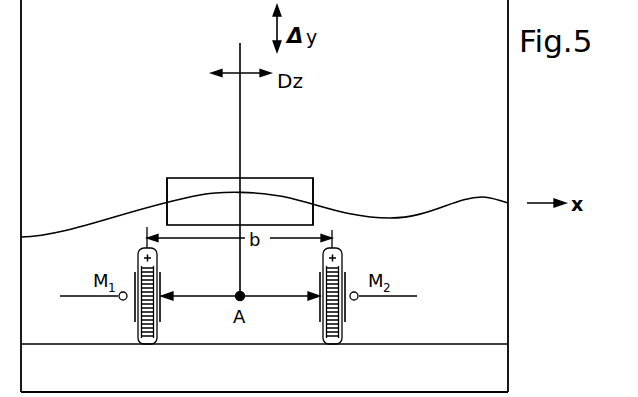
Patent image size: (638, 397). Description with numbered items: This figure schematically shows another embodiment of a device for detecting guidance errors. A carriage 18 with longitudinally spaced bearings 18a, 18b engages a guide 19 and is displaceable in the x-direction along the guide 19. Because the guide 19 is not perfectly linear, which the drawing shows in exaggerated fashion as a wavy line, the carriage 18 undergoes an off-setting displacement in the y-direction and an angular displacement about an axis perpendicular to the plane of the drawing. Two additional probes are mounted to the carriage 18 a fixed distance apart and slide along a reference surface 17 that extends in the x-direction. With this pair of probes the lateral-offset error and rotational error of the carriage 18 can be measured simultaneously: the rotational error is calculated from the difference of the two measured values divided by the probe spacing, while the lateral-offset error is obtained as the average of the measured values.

The reference surface 17 is at (442, 343).
The carriage 18 is at (261, 178).
The bearing 18a is at (167, 198).
The bearing 18b is at (313, 200).
The guide 19 is at (70, 232).